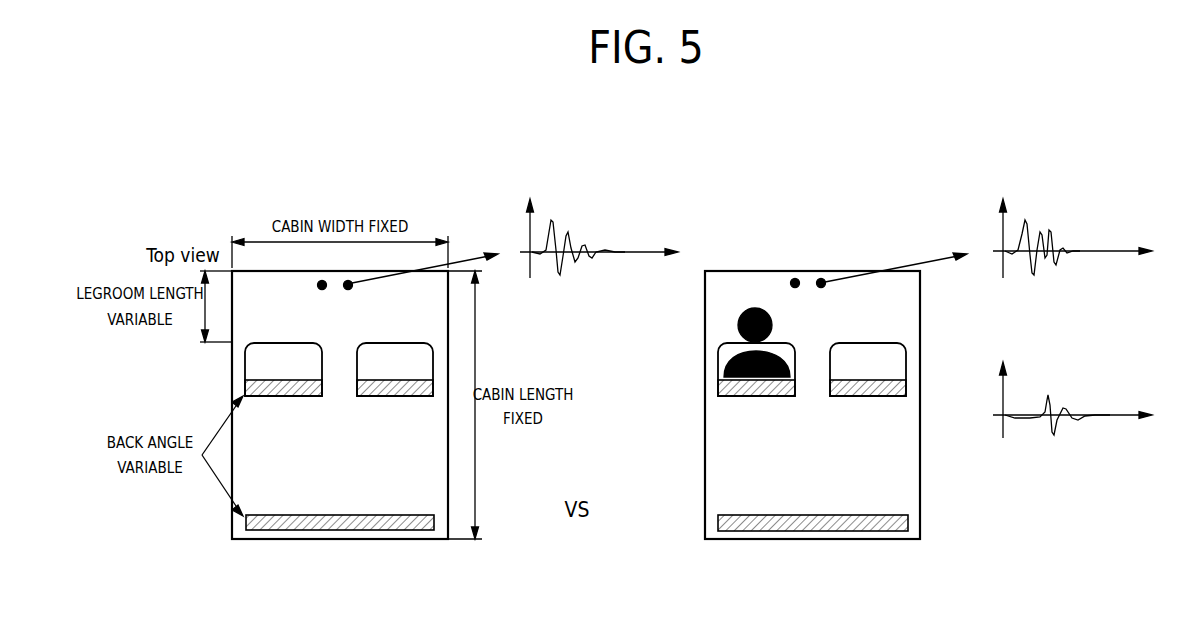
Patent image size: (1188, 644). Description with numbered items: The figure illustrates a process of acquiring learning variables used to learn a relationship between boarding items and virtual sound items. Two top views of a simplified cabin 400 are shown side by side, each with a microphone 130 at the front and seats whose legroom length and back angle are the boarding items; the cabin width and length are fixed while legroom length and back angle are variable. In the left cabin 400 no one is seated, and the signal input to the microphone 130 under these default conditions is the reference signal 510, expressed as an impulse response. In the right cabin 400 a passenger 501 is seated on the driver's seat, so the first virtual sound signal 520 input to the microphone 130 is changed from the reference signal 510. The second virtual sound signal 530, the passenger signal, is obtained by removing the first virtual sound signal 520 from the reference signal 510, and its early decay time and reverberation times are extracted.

The microphone 130 is at (350, 282).
The cabin 400 is at (340, 540).
The passenger 501 is at (755, 378).
The reference signal 510 is at (553, 222).
The first virtual sound signal 520 is at (1026, 224).
The second virtual sound signal 530 is at (1050, 395).